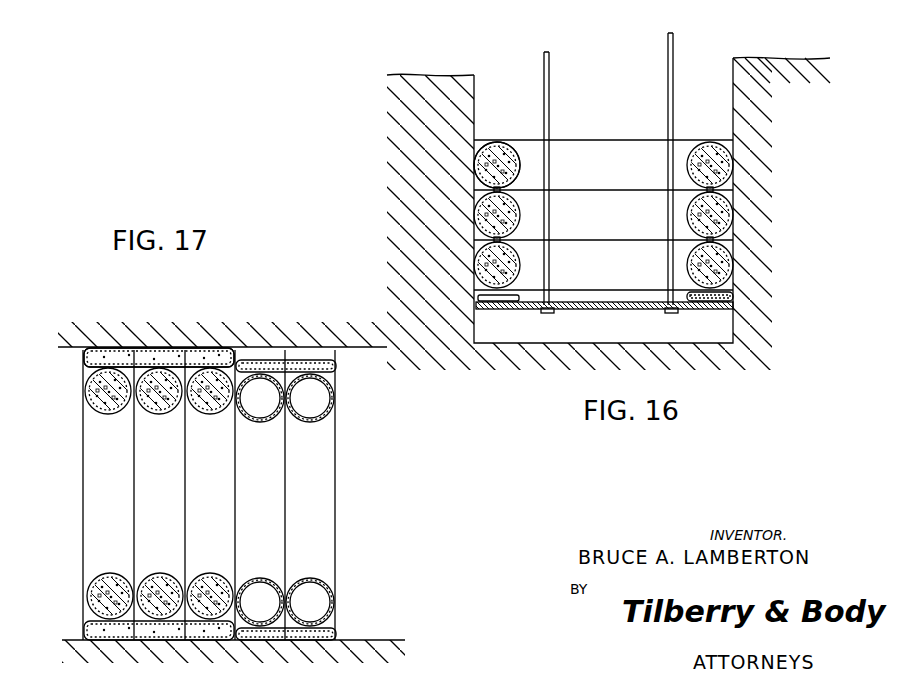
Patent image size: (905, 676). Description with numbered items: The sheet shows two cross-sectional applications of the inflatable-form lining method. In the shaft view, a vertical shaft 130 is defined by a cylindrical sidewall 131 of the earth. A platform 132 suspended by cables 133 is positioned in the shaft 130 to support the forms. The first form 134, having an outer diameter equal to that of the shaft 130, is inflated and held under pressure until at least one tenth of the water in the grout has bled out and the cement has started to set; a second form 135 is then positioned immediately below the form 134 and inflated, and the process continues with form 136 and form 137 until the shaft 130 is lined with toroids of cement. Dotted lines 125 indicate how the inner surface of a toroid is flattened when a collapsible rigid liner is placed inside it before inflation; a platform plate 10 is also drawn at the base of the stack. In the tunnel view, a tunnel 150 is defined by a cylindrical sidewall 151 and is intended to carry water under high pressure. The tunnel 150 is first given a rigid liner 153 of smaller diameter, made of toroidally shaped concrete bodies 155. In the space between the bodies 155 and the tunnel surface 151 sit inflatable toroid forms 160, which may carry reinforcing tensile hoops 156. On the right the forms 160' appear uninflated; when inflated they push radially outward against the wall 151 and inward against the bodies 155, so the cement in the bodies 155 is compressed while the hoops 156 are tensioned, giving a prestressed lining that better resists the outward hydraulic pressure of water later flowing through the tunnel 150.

In FIG. 16, the platform plate 10 is at (518, 292).
In FIG. 16, the dotted lines 125 is at (515, 148).
In FIG. 16, the vertical shaft 130 is at (506, 93).
In FIG. 16, the cylindrical sidewall 131 is at (475, 323).
In FIG. 16, the platform 132 is at (600, 309).
In FIG. 16, the cables 133 is at (668, 91).
In FIG. 16, the form 134 is at (476, 158).
In FIG. 16, the second form 135 is at (478, 212).
In FIG. 16, the form 136 is at (476, 265).
In FIG. 16, the form 137 is at (498, 308).
In FIG. 17, the tunnel 150 is at (357, 492).
In FIG. 17, the cylindrical sidewall 151 is at (358, 348).
In FIG. 17, the rigid liner 153 is at (85, 399).
In FIG. 17, the toroidally shaped concrete bodies 155 is at (150, 412).
In FIG. 17, the reinforcing tensile hoops 156 is at (126, 352).
In FIG. 17, the forms 160 is at (128, 494).
In FIG. 17, the uninflated forms 160' is at (286, 457).